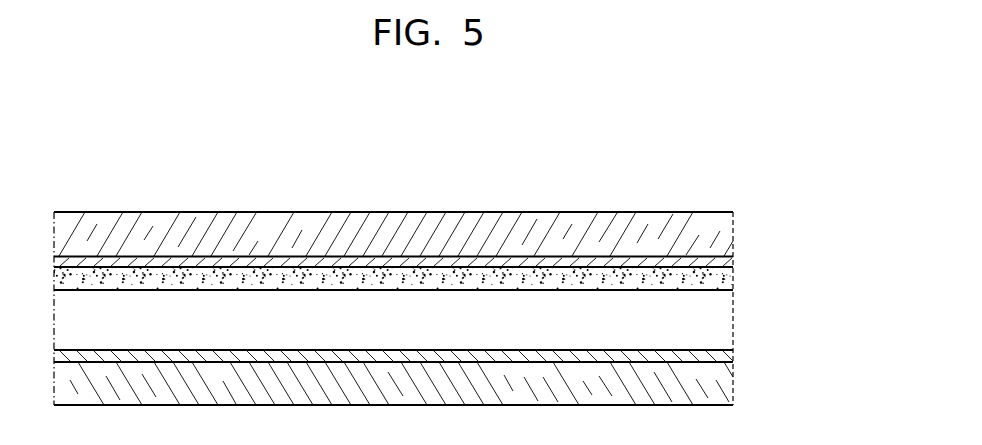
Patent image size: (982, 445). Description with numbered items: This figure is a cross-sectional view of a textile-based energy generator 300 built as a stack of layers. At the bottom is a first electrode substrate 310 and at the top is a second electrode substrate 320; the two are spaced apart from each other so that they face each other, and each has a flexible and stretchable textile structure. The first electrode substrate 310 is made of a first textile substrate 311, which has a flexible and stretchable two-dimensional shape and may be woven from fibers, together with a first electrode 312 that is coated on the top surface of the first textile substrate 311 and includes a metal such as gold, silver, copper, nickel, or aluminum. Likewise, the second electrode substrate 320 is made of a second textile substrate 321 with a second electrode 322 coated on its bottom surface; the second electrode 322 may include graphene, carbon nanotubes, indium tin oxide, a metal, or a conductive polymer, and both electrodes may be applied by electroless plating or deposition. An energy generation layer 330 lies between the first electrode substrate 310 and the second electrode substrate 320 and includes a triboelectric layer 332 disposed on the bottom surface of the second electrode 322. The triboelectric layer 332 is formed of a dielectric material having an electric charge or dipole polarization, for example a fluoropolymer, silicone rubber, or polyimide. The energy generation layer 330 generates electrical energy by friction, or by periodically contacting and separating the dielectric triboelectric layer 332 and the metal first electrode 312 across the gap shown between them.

The textile-based energy generator 300 is at (681, 147).
The first electrode substrate 310 is at (463, 373).
The first textile substrate 311 is at (721, 388).
The first electrode 312 is at (713, 357).
The second electrode substrate 320 is at (463, 241).
The second textile substrate 321 is at (717, 229).
The second electrode 322 is at (721, 262).
The energy generation layer 330 is at (459, 286).
The triboelectric layer 332 is at (719, 278).